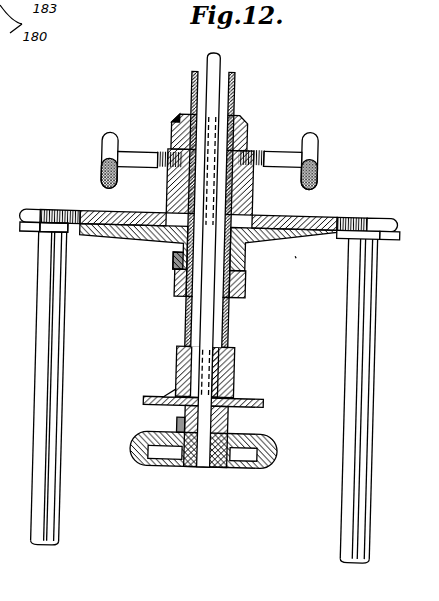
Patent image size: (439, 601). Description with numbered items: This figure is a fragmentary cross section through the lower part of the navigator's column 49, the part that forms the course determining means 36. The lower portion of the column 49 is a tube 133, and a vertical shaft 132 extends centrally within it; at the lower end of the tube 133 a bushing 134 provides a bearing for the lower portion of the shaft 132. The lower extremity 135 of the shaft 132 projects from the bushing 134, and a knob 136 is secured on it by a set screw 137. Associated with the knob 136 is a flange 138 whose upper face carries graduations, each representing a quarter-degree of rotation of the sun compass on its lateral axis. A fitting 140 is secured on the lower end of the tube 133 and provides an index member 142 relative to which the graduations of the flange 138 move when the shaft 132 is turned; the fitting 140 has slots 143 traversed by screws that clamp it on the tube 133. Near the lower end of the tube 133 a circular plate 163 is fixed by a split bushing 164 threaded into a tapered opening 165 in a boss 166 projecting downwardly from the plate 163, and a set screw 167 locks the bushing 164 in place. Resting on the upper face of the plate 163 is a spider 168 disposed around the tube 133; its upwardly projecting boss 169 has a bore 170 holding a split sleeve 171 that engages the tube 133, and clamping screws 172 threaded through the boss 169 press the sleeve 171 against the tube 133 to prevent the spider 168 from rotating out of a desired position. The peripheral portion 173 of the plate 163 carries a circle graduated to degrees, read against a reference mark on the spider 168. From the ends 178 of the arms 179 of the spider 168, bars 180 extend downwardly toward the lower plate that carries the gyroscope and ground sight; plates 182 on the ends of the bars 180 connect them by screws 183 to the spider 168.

The course determining means 36 is at (304, 259).
The column 49 is at (193, 82).
The vertical shaft 132 is at (209, 319).
The tube 133 is at (235, 86).
The bushing 134 is at (243, 360).
The lower extremity of the shaft 135 is at (215, 433).
The knob 136 is at (190, 462).
The set screw 137 is at (186, 425).
The flange 138 is at (152, 402).
The fitting 140 is at (243, 378).
The index member 142 is at (171, 394).
The slots 143 is at (240, 345).
The circular plate 163 is at (128, 240).
The split bushing 164 is at (251, 290).
The tapered opening 165 is at (246, 252).
The boss 166 is at (177, 256).
The set screw 167 is at (182, 276).
The spider 168 is at (253, 205).
The boss 169 is at (170, 180).
The bore 170 is at (246, 118).
The split sleeve 171 is at (177, 122).
The clamping screws 172 is at (153, 153).
The peripheral portion 173 is at (82, 236).
The ends of the arms 178 is at (54, 214).
The arms 179 is at (88, 214).
The bars 180 is at (44, 443).
The plates 182 is at (28, 237).
The screws 183 is at (44, 228).